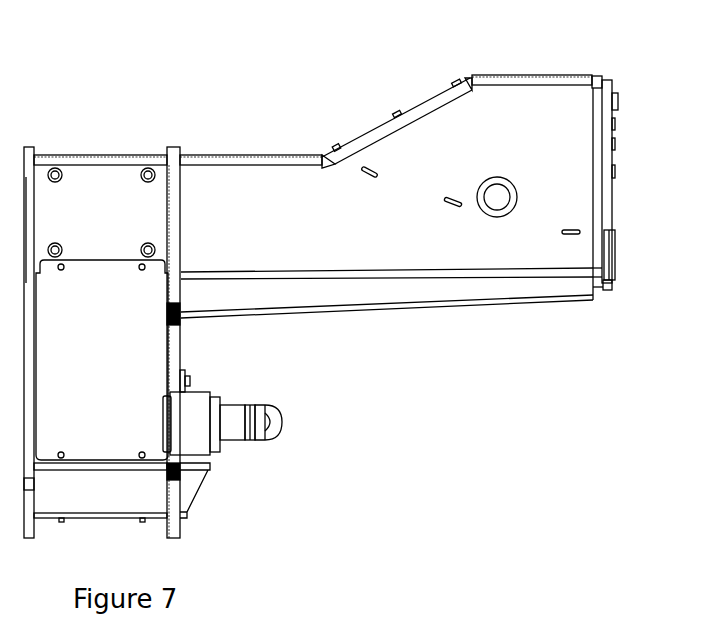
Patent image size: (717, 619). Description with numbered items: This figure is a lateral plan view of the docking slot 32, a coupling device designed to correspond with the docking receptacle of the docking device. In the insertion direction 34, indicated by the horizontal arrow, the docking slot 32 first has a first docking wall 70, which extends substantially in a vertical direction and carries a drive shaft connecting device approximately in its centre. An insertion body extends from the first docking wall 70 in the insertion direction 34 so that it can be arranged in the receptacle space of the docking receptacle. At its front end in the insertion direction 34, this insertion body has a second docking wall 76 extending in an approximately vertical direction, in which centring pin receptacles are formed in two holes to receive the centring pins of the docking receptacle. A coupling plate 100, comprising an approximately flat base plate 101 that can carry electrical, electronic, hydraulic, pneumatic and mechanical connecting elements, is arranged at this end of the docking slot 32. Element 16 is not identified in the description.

The docking slot 32 is at (112, 90).
The coupling plate 100 is at (622, 138).
The arm end post 16 is at (603, 188).
The base plate 101 is at (603, 210).
The second docking wall 76 is at (610, 280).
The first docking wall 70 is at (173, 332).
The insertion direction 34 is at (540, 385).